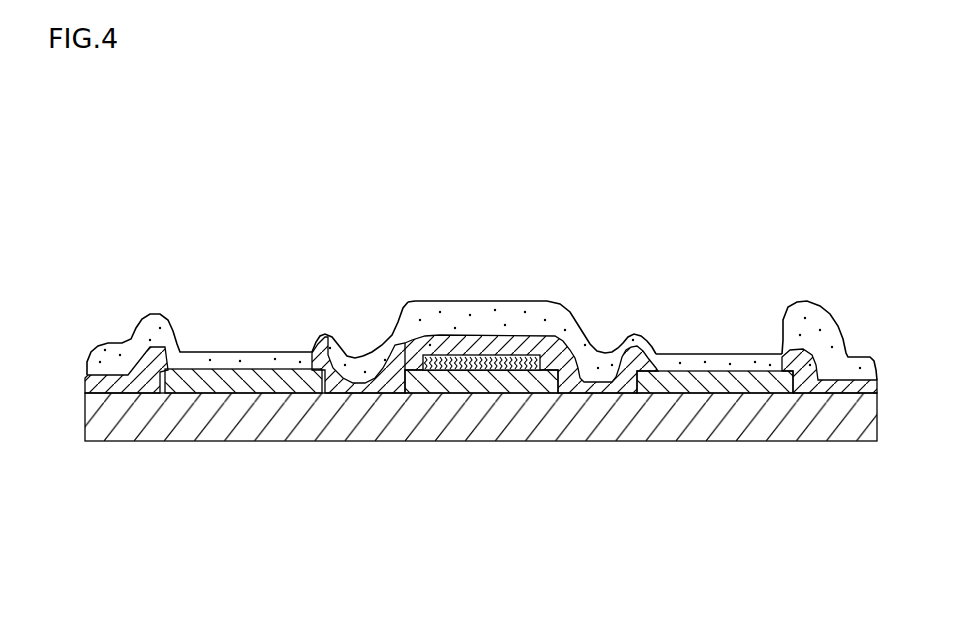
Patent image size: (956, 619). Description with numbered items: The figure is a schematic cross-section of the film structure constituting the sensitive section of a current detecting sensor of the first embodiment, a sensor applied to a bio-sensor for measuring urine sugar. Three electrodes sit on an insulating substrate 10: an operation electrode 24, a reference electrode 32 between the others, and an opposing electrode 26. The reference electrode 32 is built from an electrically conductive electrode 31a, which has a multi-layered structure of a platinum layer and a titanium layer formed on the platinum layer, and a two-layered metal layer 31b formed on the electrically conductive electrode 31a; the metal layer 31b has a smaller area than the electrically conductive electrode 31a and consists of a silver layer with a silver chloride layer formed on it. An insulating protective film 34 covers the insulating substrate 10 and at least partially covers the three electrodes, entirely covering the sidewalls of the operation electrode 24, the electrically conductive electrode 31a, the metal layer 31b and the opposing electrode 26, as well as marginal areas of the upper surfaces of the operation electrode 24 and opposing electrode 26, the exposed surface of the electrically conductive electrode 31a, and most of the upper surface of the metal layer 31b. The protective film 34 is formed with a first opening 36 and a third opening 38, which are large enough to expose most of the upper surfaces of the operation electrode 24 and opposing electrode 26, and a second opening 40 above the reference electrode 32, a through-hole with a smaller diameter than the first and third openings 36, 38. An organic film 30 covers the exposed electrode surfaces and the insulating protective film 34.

The insulating substrate 10 is at (481, 480).
The operation electrode 24 is at (243, 444).
The opposing electrode 26 is at (715, 454).
The organic film 30 is at (532, 289).
The electrically conductive electrode 31a is at (356, 296).
The two-layered metal layer 31b is at (398, 295).
The reference electrode 32 is at (372, 285).
The insulating protective film 34 is at (829, 302).
The first opening 36 is at (199, 301).
The third opening 38 is at (719, 299).
The second opening 40 is at (481, 261).